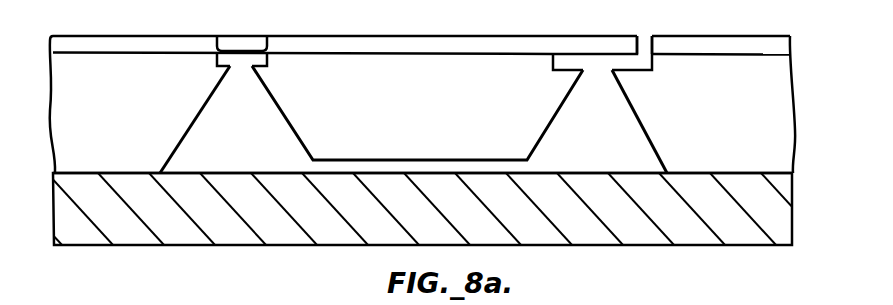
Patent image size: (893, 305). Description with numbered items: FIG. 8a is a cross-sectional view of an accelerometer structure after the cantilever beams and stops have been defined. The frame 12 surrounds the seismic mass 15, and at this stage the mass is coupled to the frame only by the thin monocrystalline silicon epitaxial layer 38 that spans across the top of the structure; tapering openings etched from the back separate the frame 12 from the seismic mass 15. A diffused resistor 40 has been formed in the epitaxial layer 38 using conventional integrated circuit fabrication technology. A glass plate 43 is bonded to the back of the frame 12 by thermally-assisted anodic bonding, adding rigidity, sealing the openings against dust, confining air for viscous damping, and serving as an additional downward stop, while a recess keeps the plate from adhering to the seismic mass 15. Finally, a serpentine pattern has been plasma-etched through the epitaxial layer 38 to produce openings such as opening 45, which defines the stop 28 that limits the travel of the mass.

The frame 12 is at (778, 126).
The seismic mass 15 is at (355, 70).
The stop 28 is at (592, 42).
The epitaxial layer 38 is at (452, 42).
The diffused resistor 40 is at (250, 40).
The glass plate 43 is at (778, 223).
The opening 45 is at (647, 36).